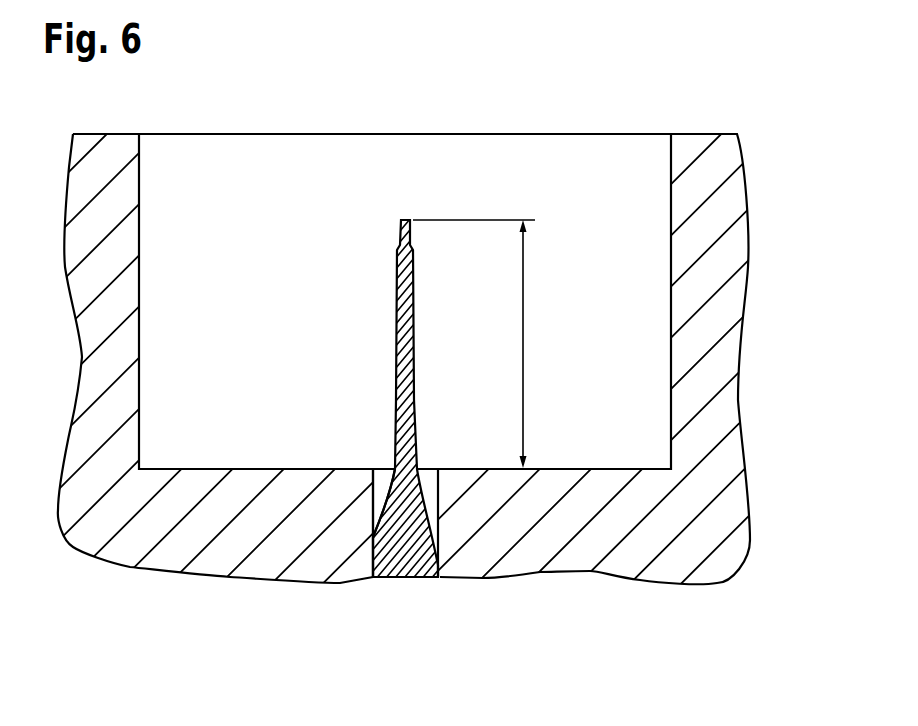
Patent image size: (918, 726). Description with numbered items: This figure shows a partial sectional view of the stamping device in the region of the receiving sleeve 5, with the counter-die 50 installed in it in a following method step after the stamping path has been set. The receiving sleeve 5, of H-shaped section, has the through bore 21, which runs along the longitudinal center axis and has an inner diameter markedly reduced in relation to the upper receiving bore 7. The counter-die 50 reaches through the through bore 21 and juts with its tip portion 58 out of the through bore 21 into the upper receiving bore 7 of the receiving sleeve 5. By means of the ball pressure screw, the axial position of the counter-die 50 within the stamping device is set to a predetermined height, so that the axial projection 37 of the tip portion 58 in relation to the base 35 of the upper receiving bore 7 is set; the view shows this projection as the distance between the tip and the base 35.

The receiving sleeve 5 is at (738, 510).
The upper receiving bore 7 is at (139, 235).
The through bore 21 is at (439, 519).
The base of the upper receiving bore 35 is at (233, 468).
The axial projection 37 is at (523, 342).
The counter-die 50 is at (368, 530).
The tip portion 58 is at (407, 218).